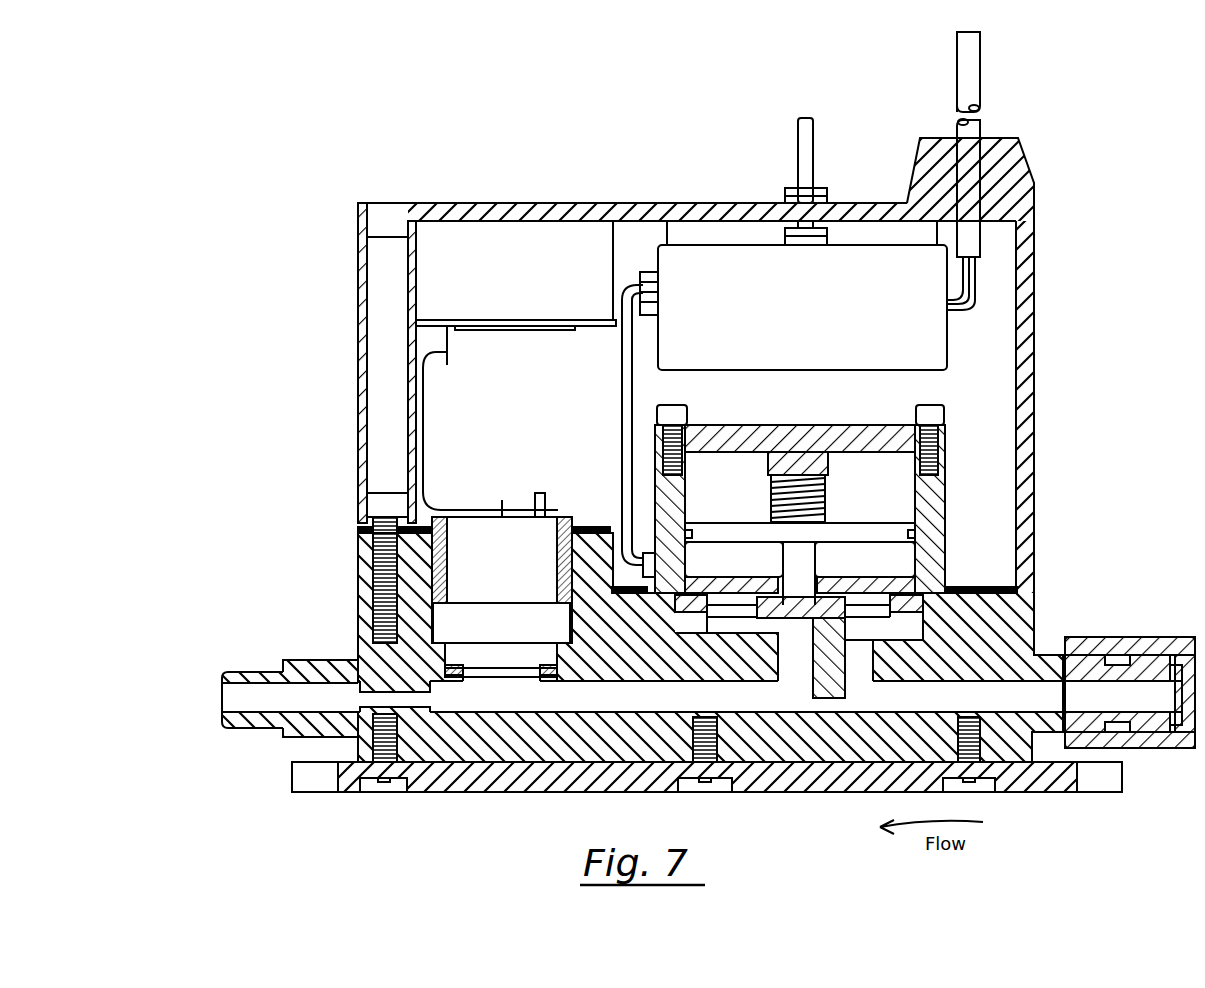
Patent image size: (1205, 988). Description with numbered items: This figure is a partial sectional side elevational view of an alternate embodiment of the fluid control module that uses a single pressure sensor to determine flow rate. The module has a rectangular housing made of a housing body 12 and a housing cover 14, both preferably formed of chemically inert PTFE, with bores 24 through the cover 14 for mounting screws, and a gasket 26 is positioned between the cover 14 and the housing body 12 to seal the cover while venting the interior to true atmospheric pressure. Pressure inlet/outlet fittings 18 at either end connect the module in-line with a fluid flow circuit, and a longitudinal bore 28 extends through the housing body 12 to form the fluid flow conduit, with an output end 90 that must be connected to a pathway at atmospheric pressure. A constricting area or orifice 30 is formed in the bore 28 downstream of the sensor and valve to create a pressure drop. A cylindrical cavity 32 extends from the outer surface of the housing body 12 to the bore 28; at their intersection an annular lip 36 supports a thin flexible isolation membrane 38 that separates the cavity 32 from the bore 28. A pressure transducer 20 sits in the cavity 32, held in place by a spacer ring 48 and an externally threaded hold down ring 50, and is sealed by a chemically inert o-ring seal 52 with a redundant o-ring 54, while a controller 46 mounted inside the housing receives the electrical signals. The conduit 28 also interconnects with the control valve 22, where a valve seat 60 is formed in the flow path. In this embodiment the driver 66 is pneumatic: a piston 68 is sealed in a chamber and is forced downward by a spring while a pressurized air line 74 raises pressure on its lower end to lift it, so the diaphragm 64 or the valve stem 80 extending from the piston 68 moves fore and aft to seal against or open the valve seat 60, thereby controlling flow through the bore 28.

The housing body 12 is at (1034, 605).
The housing cover 14 is at (1033, 393).
The pressure inlet/outlet fittings 18 is at (260, 672).
The pressure transducer 20 is at (511, 663).
The control valve 22 is at (989, 361).
The bores 24 is at (385, 363).
The gasket 26 is at (978, 585).
The longitudinal bore 28 is at (625, 700).
The constricting area 30 is at (427, 700).
The cylindrical cavity 32 is at (572, 522).
The annular lip 36 is at (545, 676).
The isolation membrane 38 is at (510, 668).
The controller 46 is at (518, 323).
The spacer ring 48 is at (520, 636).
The hold down ring 50 is at (557, 548).
The o-ring seal 52 is at (449, 666).
The o-ring 54 is at (458, 656).
The valve seat 60 is at (784, 628).
The diaphragm 64 is at (850, 607).
The driver 66 is at (795, 318).
The piston 68 is at (860, 530).
The pressurized air line 74 is at (633, 400).
The valve stem 80 is at (808, 559).
The output end 90 is at (200, 710).